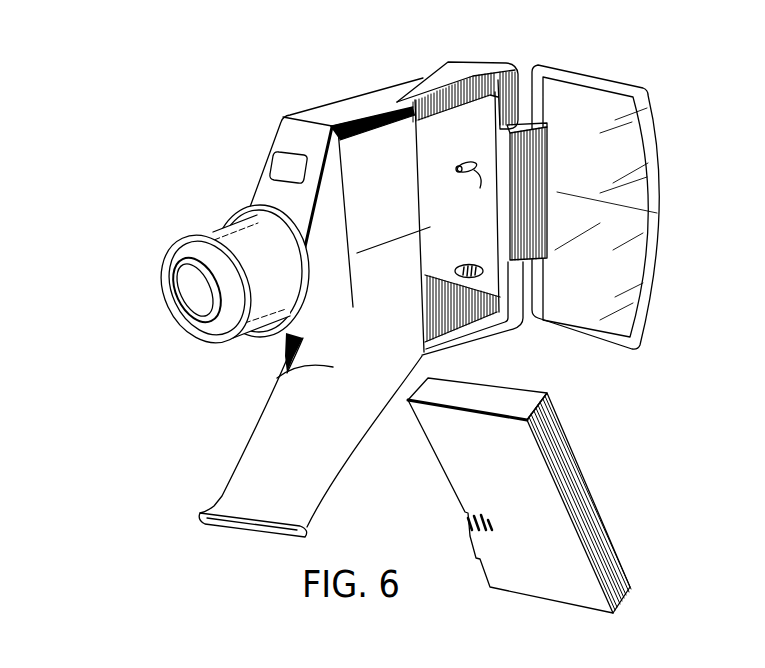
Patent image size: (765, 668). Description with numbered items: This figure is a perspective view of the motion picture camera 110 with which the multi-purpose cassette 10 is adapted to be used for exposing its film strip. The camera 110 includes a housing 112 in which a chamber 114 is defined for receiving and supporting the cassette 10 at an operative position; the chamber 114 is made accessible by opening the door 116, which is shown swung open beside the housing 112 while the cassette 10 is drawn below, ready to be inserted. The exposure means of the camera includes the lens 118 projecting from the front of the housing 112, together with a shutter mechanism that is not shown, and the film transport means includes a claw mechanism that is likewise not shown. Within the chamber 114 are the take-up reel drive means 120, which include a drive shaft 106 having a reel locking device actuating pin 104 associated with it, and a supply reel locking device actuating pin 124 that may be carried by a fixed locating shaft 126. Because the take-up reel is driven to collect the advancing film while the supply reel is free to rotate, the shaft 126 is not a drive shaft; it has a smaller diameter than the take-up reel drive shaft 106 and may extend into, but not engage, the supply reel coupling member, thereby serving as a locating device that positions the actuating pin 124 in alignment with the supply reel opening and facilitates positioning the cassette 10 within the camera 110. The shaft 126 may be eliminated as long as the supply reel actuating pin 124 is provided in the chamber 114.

The cassette 10 is at (458, 460).
The reel locking device actuating pin 104 is at (490, 265).
The drive shaft 106 is at (456, 263).
The motion picture camera 110 is at (290, 93).
The housing 112 is at (457, 72).
The chamber 114 is at (476, 103).
The door 116 is at (655, 148).
The lens 118 is at (209, 287).
The take-up reel drive means 120 is at (451, 262).
The supply reel locking device actuating pin 124 is at (480, 188).
The fixed locating shaft 126 is at (463, 162).